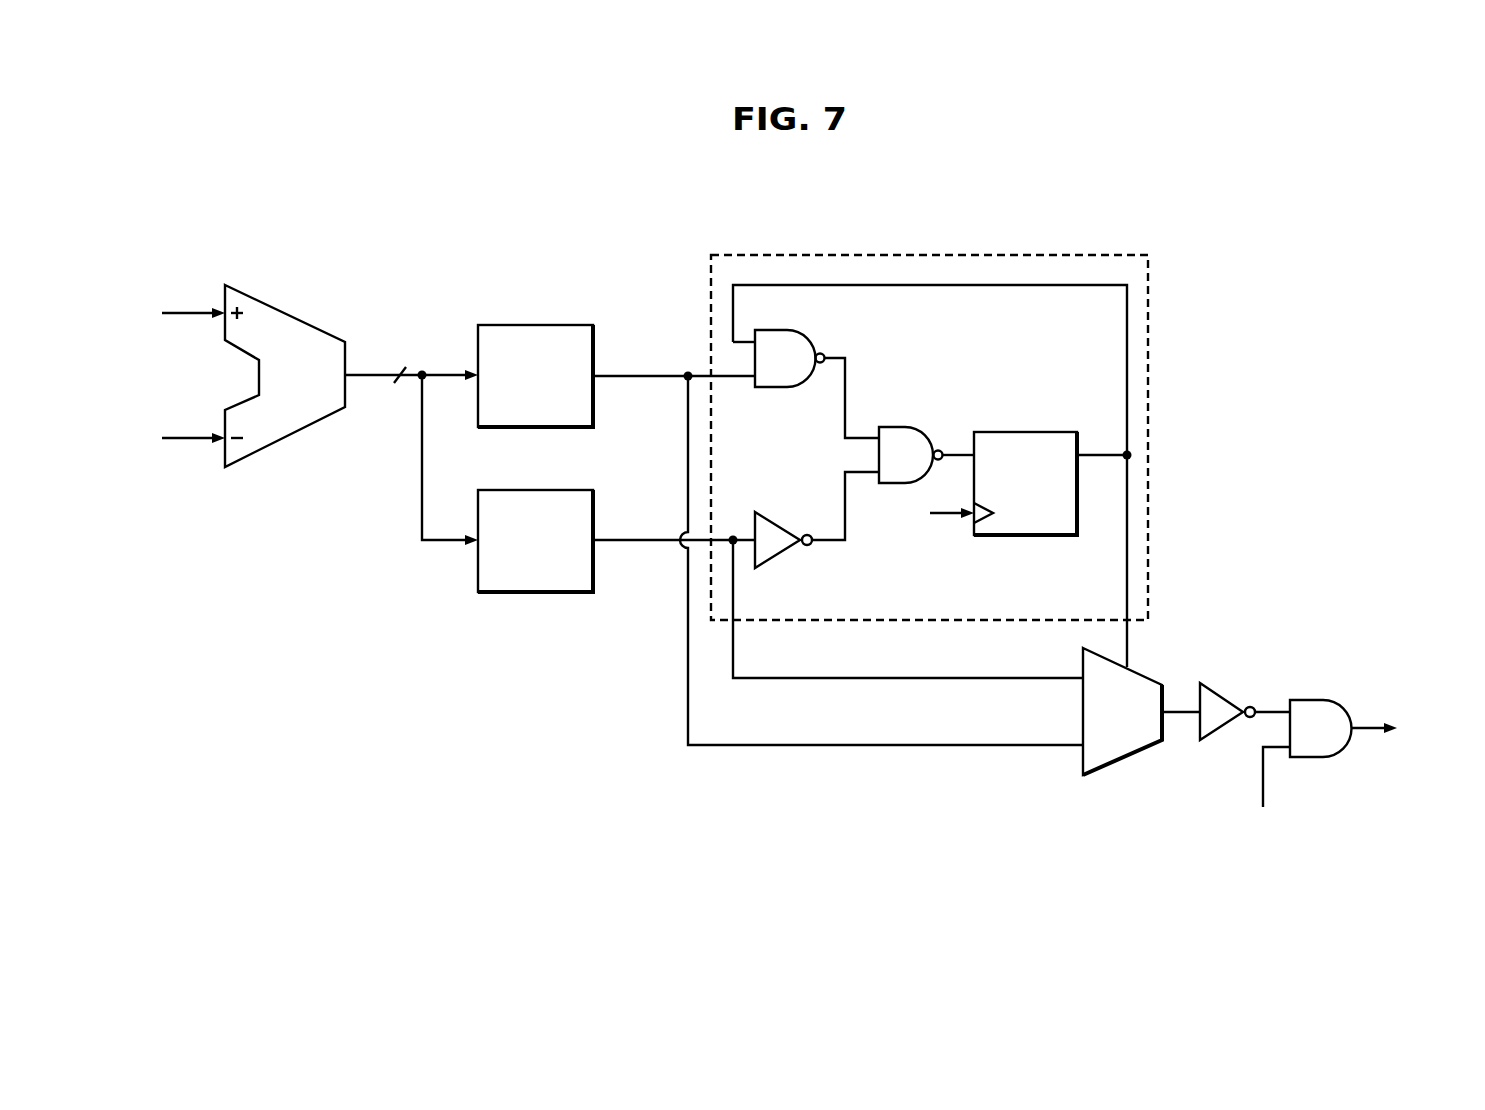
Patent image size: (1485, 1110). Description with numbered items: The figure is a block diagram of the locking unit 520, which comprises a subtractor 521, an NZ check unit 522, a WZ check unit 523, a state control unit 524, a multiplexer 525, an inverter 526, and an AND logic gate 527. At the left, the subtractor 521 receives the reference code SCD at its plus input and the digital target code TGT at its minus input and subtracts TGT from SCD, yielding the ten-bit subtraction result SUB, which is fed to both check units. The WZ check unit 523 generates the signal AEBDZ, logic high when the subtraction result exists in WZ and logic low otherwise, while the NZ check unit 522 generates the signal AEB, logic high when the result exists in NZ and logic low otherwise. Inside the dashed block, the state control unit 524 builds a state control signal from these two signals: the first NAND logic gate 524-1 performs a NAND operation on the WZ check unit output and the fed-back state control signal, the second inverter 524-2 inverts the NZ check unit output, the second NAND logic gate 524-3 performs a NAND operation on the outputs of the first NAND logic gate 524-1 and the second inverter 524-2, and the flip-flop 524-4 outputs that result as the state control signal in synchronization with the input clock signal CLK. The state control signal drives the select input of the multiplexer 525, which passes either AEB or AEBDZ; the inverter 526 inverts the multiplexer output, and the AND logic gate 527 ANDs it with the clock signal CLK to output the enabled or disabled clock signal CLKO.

The locking unit 520 is at (1262, 275).
The subtractor 521 is at (307, 297).
The NZ check unit 522 is at (538, 488).
The WZ check unit 523 is at (538, 323).
The state control unit 524 is at (932, 255).
The first NAND logic gate 524-1 is at (785, 330).
The second inverter 524-2 is at (782, 557).
The second NAND logic gate 524-3 is at (902, 425).
The flip-flop 524-4 is at (1025, 432).
The multiplexer 525 is at (1128, 762).
The inverter 526 is at (1225, 730).
The AND logic gate 527 is at (1313, 760).